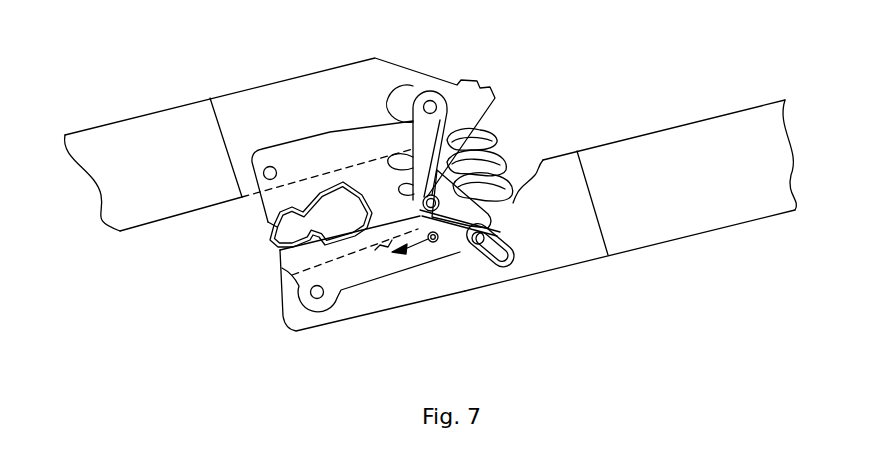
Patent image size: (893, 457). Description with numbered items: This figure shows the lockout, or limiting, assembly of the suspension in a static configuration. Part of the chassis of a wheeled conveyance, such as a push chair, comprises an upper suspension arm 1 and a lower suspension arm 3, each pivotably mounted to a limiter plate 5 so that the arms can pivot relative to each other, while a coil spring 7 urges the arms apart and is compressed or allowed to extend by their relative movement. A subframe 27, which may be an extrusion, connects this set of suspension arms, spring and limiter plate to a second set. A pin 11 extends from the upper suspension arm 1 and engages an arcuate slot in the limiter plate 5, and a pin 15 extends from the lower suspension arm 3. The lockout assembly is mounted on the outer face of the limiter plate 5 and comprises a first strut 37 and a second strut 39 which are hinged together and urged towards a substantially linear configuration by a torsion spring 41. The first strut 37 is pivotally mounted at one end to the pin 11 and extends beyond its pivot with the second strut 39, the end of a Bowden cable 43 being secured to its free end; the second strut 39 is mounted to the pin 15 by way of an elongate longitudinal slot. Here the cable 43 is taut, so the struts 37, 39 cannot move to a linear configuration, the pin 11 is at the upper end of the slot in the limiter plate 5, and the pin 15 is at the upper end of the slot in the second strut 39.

The upper suspension arm 1 is at (170, 108).
The lower suspension arm 3 is at (655, 136).
The limiter plate 5 is at (265, 214).
The coil spring 7 is at (497, 137).
The pin 11 is at (429, 100).
The pin 15 is at (500, 257).
The subframe 27 is at (270, 243).
The first strut 37 is at (390, 110).
The second strut 39 is at (480, 257).
The torsion spring 41 is at (448, 228).
The Bowden cable 43 is at (405, 260).